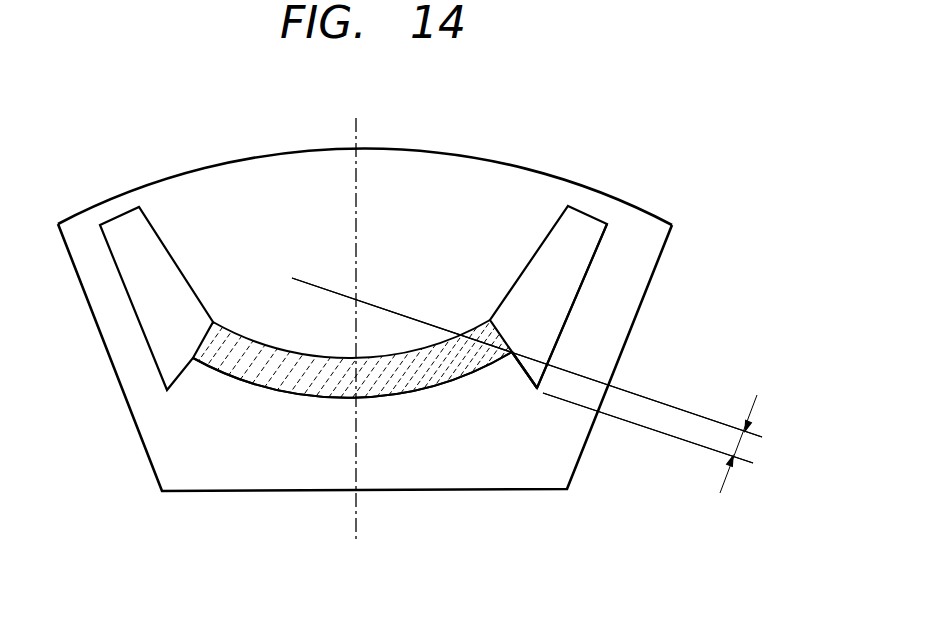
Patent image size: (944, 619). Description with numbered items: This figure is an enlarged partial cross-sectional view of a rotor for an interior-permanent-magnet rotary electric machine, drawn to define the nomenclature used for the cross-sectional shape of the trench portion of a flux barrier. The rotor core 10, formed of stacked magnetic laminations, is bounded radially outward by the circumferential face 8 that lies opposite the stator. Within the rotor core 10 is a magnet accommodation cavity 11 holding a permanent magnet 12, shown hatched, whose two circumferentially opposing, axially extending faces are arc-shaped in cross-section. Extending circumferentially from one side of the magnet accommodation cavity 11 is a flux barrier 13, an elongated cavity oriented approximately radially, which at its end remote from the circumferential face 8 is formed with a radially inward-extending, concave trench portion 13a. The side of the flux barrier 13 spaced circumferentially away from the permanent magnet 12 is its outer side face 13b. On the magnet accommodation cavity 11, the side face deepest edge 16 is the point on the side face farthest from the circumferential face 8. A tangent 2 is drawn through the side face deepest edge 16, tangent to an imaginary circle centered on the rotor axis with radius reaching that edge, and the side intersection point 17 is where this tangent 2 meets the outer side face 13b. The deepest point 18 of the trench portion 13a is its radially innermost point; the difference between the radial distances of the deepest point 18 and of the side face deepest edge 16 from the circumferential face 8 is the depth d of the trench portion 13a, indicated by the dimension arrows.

The tangent line 2 is at (676, 408).
The circumferential face 8 is at (478, 157).
The rotor core 10 is at (198, 480).
The magnet accommodation cavity 11 is at (333, 400).
The permanent magnet 12 is at (279, 387).
The flux barrier 13 is at (588, 232).
The trench portion 13a is at (531, 377).
The outer side face 13b is at (585, 279).
The side face deepest edge 16 is at (512, 352).
The side intersection point 17 is at (550, 368).
The deepest point 18 is at (540, 395).